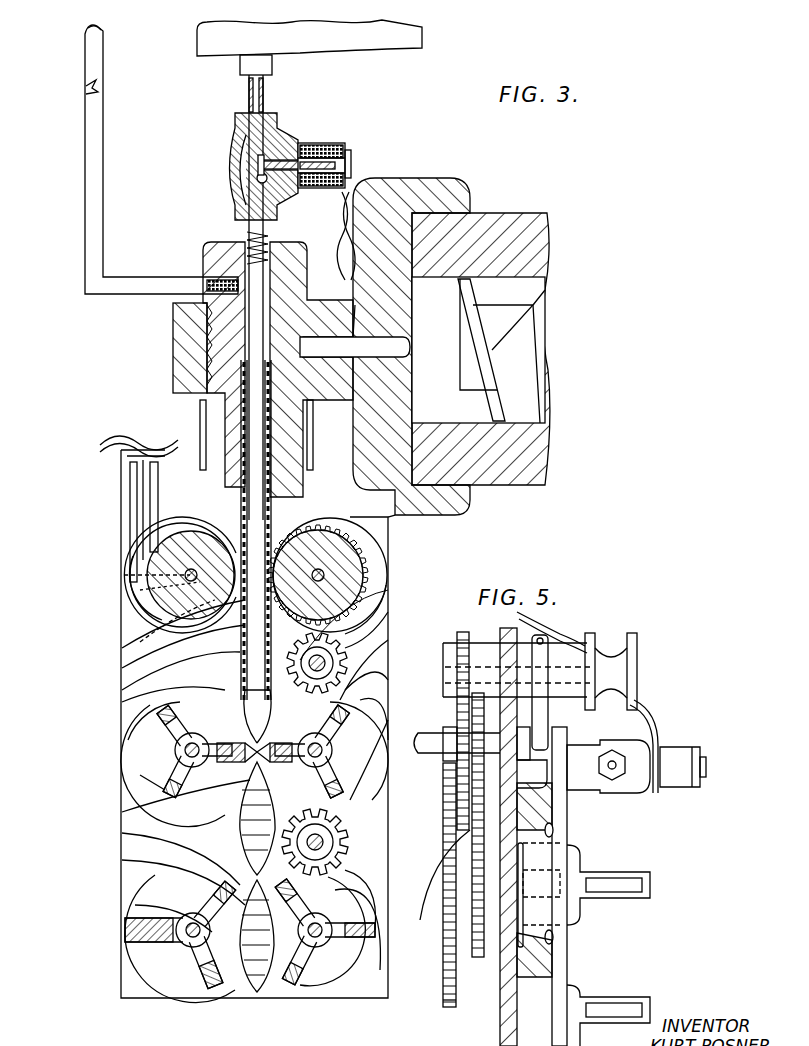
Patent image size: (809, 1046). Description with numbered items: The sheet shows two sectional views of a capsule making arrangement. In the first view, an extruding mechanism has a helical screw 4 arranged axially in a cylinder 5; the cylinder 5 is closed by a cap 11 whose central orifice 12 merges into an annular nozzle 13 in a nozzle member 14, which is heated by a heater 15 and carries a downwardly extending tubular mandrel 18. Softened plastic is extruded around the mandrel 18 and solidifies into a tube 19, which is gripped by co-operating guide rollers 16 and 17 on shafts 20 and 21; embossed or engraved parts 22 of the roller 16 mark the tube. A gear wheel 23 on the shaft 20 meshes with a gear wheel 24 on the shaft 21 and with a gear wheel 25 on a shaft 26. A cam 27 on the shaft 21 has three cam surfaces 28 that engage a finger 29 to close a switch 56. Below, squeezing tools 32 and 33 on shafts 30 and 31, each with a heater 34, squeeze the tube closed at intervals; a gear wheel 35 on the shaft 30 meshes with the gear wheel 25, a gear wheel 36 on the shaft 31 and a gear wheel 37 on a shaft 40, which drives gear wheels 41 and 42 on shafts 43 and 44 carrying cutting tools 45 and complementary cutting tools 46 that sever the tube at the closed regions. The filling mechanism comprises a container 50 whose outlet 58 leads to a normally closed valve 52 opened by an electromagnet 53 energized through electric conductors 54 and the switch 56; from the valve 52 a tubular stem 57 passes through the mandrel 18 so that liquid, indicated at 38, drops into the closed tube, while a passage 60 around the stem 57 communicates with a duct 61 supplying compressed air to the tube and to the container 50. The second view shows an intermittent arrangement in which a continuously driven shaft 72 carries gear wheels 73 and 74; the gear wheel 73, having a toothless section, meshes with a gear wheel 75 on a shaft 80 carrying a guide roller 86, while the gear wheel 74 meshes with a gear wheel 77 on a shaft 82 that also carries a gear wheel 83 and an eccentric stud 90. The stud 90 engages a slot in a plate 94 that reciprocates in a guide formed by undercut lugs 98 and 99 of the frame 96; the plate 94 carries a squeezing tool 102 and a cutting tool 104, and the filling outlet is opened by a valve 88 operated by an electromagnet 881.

In FIG. 3, the helical screw 4 is at (490, 352).
In FIG. 3, the cylinder 5 is at (527, 232).
In FIG. 3, the cap 11 is at (462, 192).
In FIG. 3, the central orifice 12 is at (373, 347).
In FIG. 3, the annular nozzle 13 is at (215, 330).
In FIG. 3, the nozzle member 14 is at (203, 405).
In FIG. 3, the heater 15 is at (440, 465).
In FIG. 3, the guide roller 16 is at (345, 568).
In FIG. 3, the guide roller 17 is at (180, 588).
In FIG. 3, the tubular mandrel 18 is at (150, 545).
In FIG. 3, the tube 19 is at (124, 686).
In FIG. 3, the rotatable shaft 20 is at (370, 548).
In FIG. 3, the rotatable shaft 21 is at (150, 600).
In FIG. 3, the embossed or engraved parts 22 is at (388, 527).
In FIG. 3, the gear wheel 23 is at (372, 612).
In FIG. 3, the gear wheel 24 is at (122, 666).
In FIG. 3, the gear wheel 25 is at (380, 625).
In FIG. 3, the rotatable shaft 26 is at (375, 640).
In FIG. 3, the cam 27 is at (145, 636).
In FIG. 3, the cam surfaces 28 is at (124, 574).
In FIG. 3, the finger 29 is at (140, 590).
In FIG. 3, the rotatable shaft 30 is at (375, 690).
In FIG. 3, the rotatable shaft 31 is at (185, 752).
In FIG. 3, the squeezing tool 32 is at (350, 700).
In FIG. 3, the squeezing tool 33 is at (165, 712).
In FIG. 3, the heater 34 is at (160, 778).
In FIG. 3, the gear wheel 35 is at (305, 690).
In FIG. 3, the gear wheel 36 is at (125, 700).
In FIG. 3, the gear wheel 37 is at (345, 825).
In FIG. 3, the filling material in tube 38 is at (245, 815).
In FIG. 3, the shaft 40 is at (320, 840).
In FIG. 3, the gear wheel 41 is at (360, 870).
In FIG. 3, the gear wheel 42 is at (122, 833).
In FIG. 3, the rotatable shaft 43 is at (350, 905).
In FIG. 3, the rotatable shaft 44 is at (185, 925).
In FIG. 3, the cutting tools 45 is at (290, 885).
In FIG. 3, the complementary cutting tools 46 is at (122, 858).
In FIG. 3, the container 50 is at (402, 40).
In FIG. 3, the valve 52 is at (234, 155).
In FIG. 3, the electromagnet 53 is at (328, 145).
In FIG. 3, the electric conductors 54 is at (342, 218).
In FIG. 3, the switch 56 is at (143, 505).
In FIG. 3, the tubular stem 57 is at (134, 490).
In FIG. 3, the outlet 58 is at (265, 99).
In FIG. 3, the passage 60 is at (150, 500).
In FIG. 3, the duct 61 is at (86, 84).
In FIG. 5, the rotatable shaft 72 is at (418, 735).
In FIG. 5, the gear wheel 73 is at (456, 768).
In FIG. 5, the gear wheel 74 is at (460, 700).
In FIG. 5, the gear wheel 75 is at (458, 640).
In FIG. 5, the gear wheel 77 is at (440, 895).
In FIG. 5, the shaft 80 is at (470, 660).
In FIG. 5, the rotatable shaft 82 is at (470, 935).
In FIG. 5, the gear wheel 83 is at (448, 998).
In FIG. 5, the guide roller 86 is at (614, 660).
In FIG. 5, the valve 88 is at (640, 750).
In FIG. 5, the electromagnet 881 is at (690, 752).
In FIG. 5, the eccentric stud 90 is at (560, 895).
In FIG. 5, the plate 94 is at (556, 938).
In FIG. 5, the frame 96 is at (506, 1012).
In FIG. 5, the undercut lug 98 is at (545, 957).
In FIG. 5, the undercut lug 99 is at (540, 811).
In FIG. 5, the squeezing tool 102 is at (648, 884).
In FIG. 5, the cutting tool 104 is at (645, 1010).